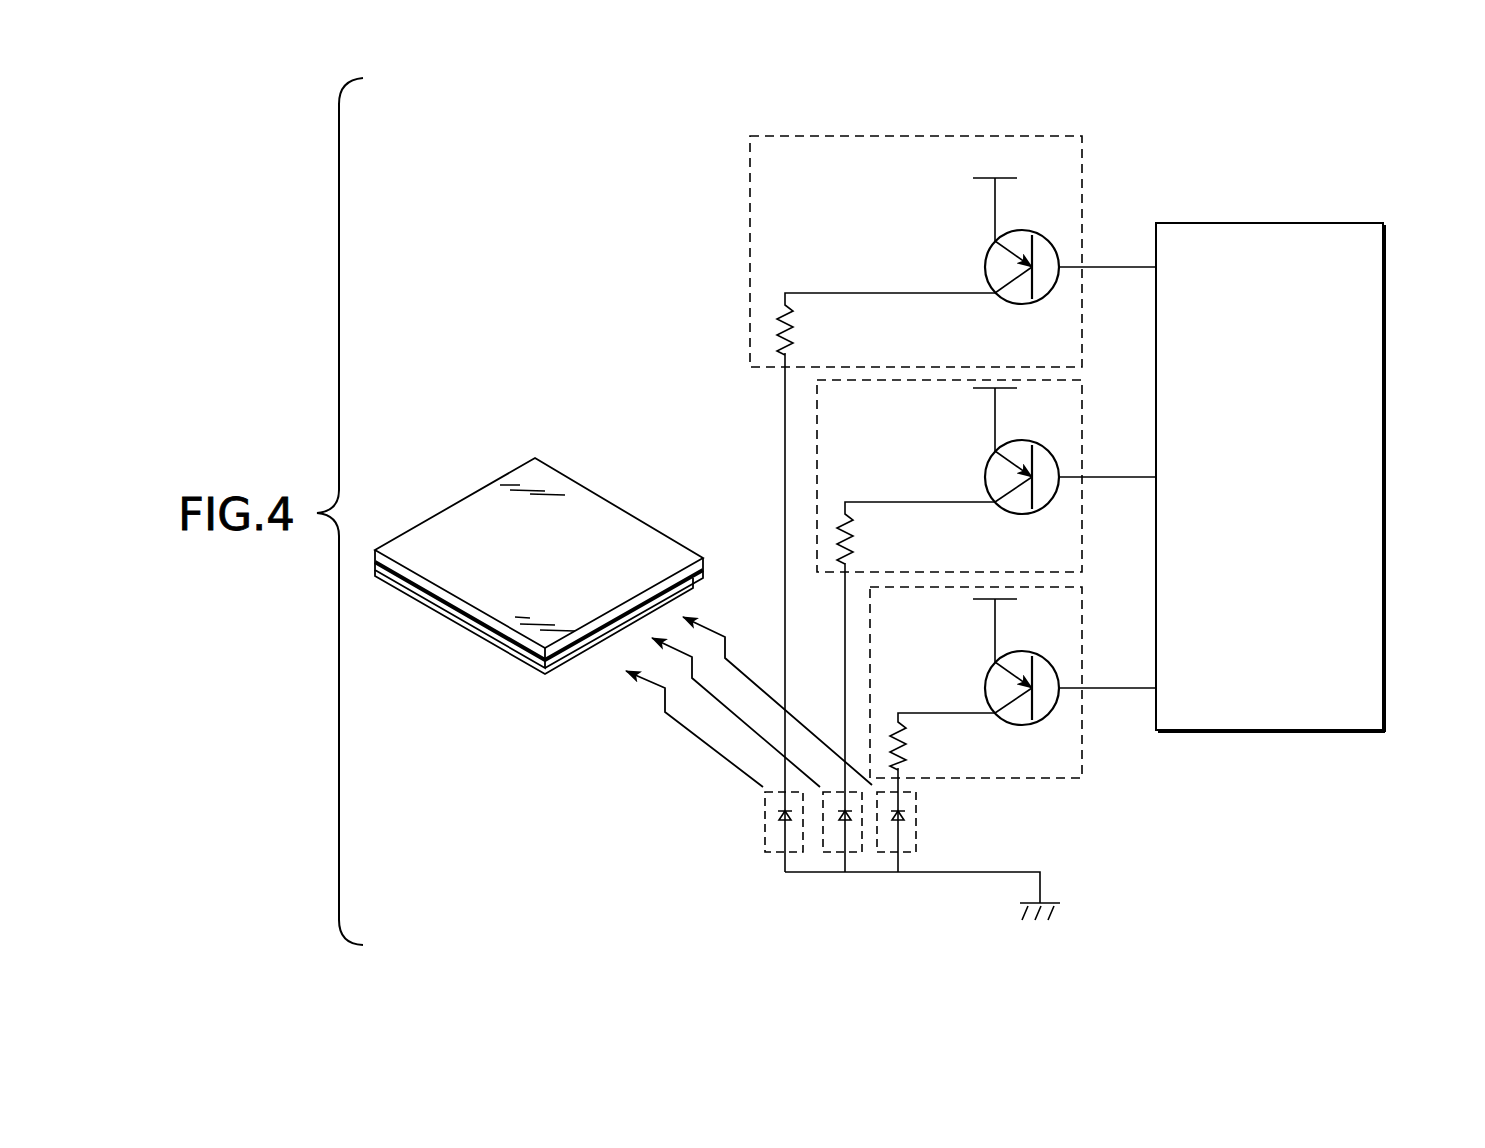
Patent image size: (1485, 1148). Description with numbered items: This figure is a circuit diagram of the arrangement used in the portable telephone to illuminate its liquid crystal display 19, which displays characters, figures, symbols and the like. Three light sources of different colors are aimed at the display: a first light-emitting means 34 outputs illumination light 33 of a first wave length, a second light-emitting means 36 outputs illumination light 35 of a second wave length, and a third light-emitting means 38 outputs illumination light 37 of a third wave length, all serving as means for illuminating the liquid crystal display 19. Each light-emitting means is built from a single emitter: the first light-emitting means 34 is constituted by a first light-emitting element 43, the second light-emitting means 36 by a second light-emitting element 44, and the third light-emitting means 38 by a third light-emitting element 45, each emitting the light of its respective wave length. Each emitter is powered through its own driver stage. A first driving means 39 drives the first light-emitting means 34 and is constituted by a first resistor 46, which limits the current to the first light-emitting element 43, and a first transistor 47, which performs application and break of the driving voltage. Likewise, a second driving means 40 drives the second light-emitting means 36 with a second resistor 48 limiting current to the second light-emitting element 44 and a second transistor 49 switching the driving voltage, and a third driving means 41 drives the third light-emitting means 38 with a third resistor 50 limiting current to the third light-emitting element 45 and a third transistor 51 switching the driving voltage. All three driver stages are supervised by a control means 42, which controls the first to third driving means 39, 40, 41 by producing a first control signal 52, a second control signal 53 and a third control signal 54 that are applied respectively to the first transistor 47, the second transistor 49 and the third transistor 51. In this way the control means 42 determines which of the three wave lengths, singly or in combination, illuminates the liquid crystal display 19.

The liquid crystal display 19 is at (471, 517).
The illumination light of a first wave length 33 is at (694, 729).
The first light-emitting means 34 is at (771, 853).
The illumination light of a second wave length 35 is at (736, 712).
The second light-emitting means 36 is at (829, 853).
The illumination light of a third wave length 37 is at (777, 697).
The third light-emitting means 38 is at (883, 853).
The first driving means 39 is at (1083, 155).
The second driving means 40 is at (1083, 545).
The third driving means 41 is at (1083, 737).
The control means 42 is at (1387, 330).
The first light-emitting element 43 is at (790, 822).
The second light-emitting element 44 is at (850, 822).
The third light-emitting element 45 is at (903, 822).
The first resistor 46 is at (797, 325).
The first transistor 47 is at (991, 260).
The second resistor 48 is at (857, 537).
The second transistor 49 is at (987, 470).
The third resistor 50 is at (912, 740).
The third transistor 51 is at (988, 680).
The first control signal 52 is at (1113, 262).
The second control signal 53 is at (1115, 472).
The third control signal 54 is at (1113, 684).